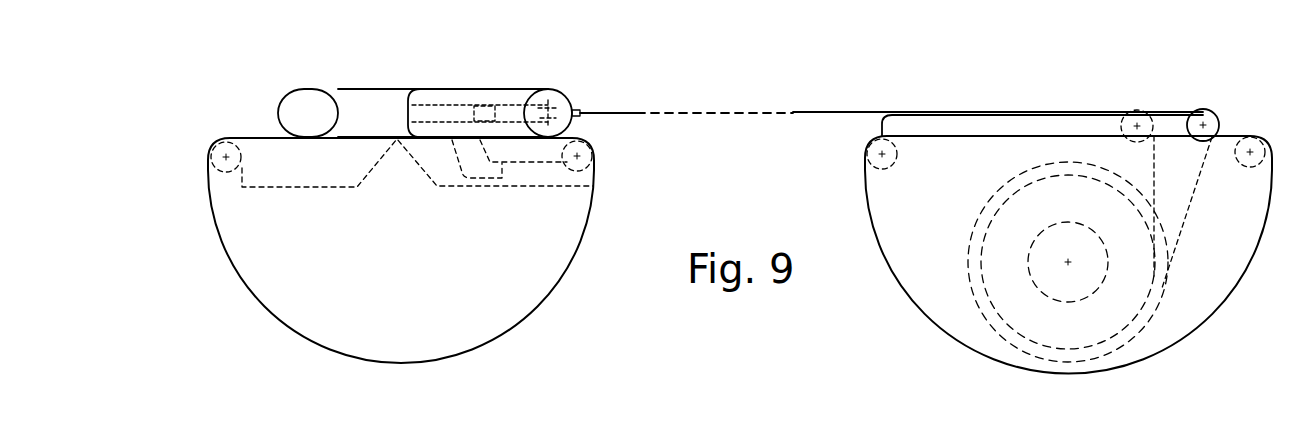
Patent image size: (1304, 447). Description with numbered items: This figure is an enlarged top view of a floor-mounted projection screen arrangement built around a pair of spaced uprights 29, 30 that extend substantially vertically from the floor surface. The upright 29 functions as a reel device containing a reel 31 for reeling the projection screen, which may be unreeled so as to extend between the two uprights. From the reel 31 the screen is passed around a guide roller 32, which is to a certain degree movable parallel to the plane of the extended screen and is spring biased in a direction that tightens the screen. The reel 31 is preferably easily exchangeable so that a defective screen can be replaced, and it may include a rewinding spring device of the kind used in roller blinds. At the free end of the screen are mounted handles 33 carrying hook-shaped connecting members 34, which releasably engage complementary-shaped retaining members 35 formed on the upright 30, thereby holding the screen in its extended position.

The upright 29 is at (1227, 298).
The upright 30 is at (540, 312).
The reel 31 is at (1035, 282).
The guide roller 32 is at (1198, 112).
The handle 33 is at (367, 93).
The hook-shaped connecting member 34 is at (462, 147).
The retaining member 35 is at (567, 133).